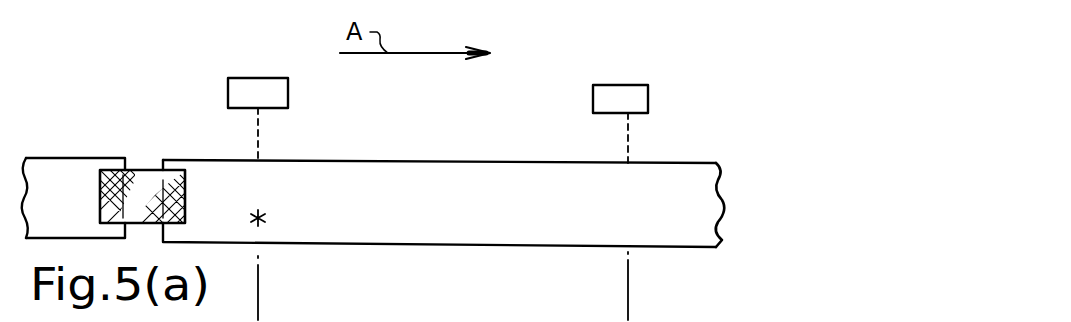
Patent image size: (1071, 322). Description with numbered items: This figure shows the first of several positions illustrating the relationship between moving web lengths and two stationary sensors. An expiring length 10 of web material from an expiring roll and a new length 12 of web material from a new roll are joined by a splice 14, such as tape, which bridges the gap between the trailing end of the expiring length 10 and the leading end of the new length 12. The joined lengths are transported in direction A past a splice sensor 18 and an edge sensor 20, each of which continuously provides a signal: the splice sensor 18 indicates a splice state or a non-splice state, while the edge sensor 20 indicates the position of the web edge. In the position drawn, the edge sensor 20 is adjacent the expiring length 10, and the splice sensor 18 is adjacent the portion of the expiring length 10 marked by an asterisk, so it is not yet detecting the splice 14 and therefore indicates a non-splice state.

The expiring length 10 is at (445, 217).
The new length 12 is at (69, 198).
The splice 14 is at (145, 173).
The splice sensor 18 is at (228, 91).
The edge sensor 20 is at (640, 98).